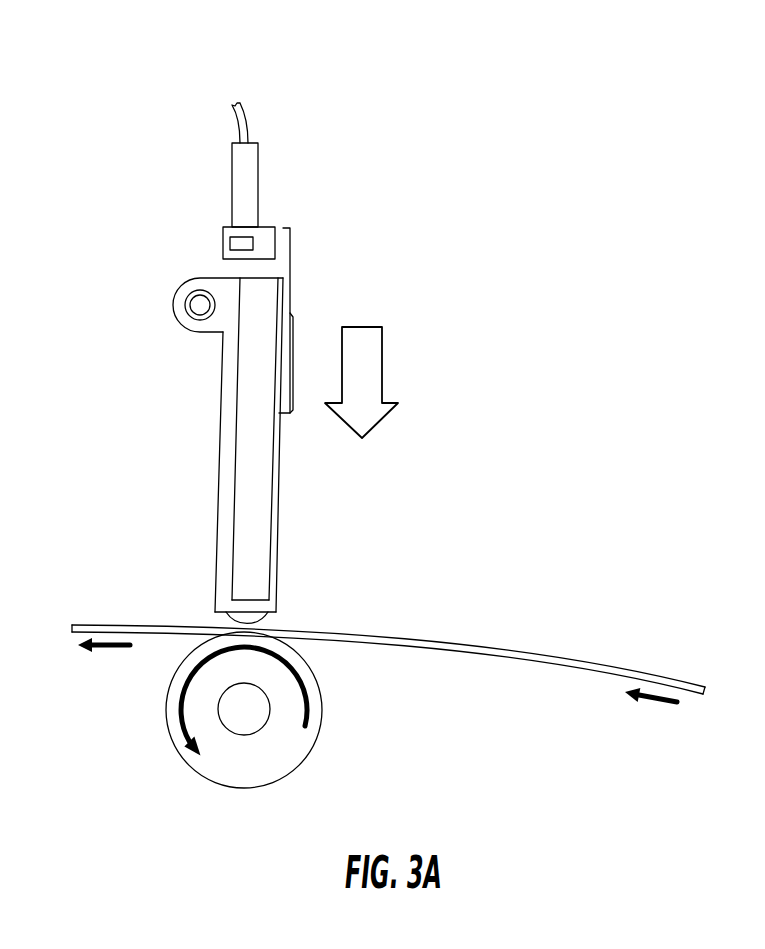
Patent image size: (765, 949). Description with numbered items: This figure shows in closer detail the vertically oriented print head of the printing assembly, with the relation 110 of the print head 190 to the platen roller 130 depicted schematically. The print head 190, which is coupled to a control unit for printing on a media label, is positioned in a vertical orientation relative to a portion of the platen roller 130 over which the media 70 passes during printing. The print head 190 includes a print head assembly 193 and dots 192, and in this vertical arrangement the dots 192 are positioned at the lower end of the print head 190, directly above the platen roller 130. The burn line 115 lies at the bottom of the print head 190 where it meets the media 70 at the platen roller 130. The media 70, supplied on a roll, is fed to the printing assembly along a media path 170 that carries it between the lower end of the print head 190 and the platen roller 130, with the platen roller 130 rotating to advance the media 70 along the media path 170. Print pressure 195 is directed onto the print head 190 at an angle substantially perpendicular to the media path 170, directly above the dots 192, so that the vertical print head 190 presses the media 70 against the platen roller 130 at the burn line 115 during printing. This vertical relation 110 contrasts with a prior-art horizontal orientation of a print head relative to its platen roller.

The vertical orientation relation 110 is at (484, 67).
The print head 190 is at (198, 245).
The print head assembly 193 is at (218, 360).
The dots 192 is at (197, 608).
The burn line 115 is at (272, 637).
The print pressure 195 is at (378, 394).
The platen roller 130 is at (168, 746).
The media 70 is at (519, 672).
The media path 170 is at (677, 683).